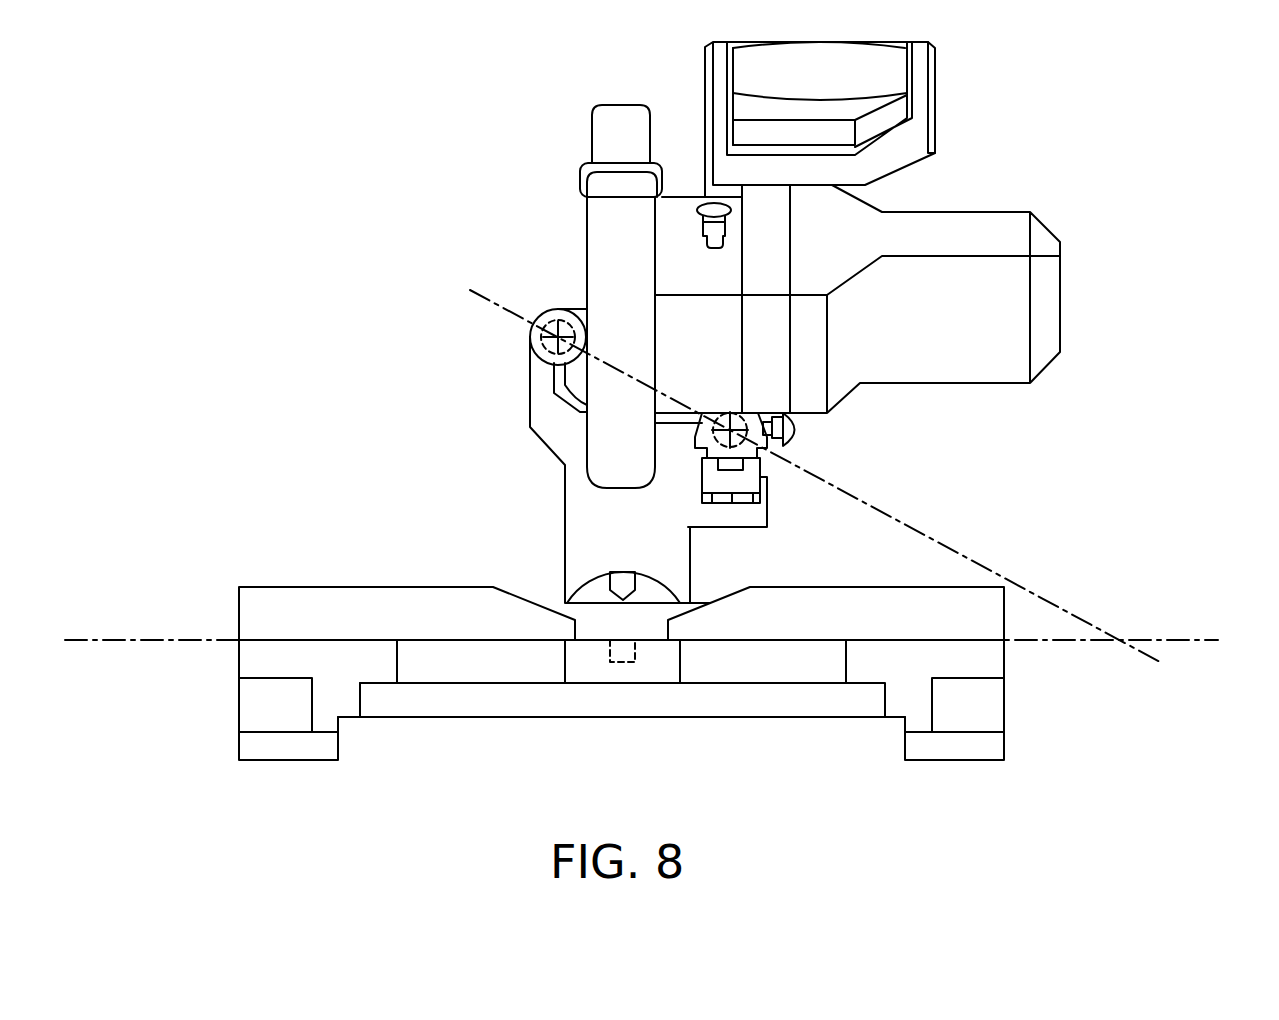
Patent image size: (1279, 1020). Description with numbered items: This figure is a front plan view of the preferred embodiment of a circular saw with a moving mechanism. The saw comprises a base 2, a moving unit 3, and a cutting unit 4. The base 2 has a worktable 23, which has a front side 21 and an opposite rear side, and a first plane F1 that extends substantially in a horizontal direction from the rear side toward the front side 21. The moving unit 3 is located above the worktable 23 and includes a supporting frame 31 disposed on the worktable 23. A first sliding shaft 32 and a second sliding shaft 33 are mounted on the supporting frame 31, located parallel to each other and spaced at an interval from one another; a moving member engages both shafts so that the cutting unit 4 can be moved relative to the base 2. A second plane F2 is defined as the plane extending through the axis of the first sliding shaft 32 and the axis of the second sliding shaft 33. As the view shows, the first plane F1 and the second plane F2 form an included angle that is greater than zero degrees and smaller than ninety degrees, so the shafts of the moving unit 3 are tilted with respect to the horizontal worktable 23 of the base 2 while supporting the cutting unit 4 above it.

The base 2 is at (772, 756).
The front side 21 is at (657, 662).
The worktable 23 is at (482, 667).
The moving unit 3 is at (512, 387).
The supporting frame 31 is at (550, 433).
The first sliding shaft 32 is at (555, 305).
The second sliding shaft 33 is at (757, 412).
The cutting unit 4 is at (991, 158).
The first plane F1 is at (664, 640).
The second plane F2 is at (838, 489).